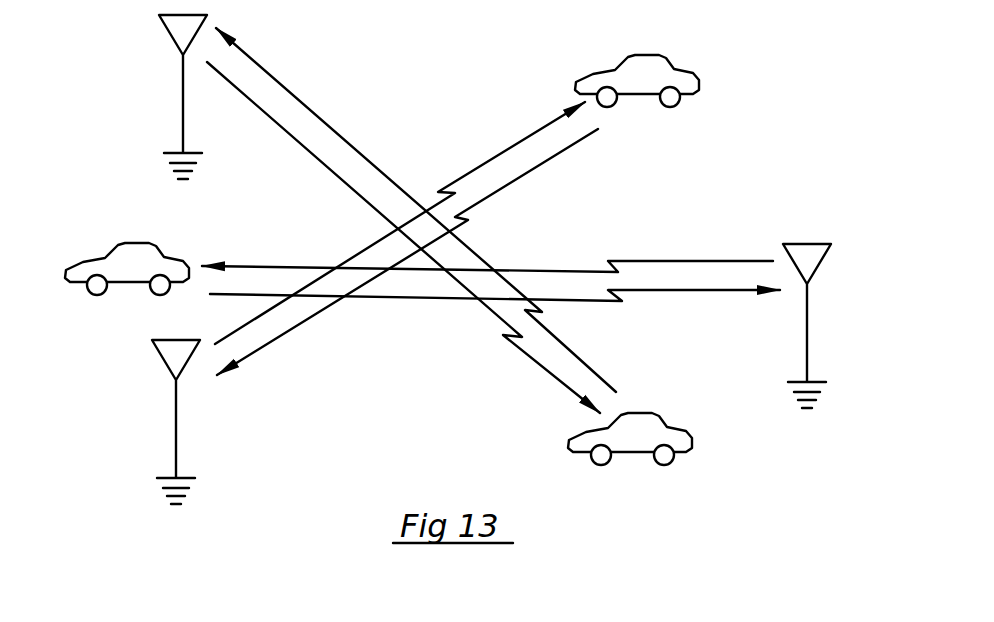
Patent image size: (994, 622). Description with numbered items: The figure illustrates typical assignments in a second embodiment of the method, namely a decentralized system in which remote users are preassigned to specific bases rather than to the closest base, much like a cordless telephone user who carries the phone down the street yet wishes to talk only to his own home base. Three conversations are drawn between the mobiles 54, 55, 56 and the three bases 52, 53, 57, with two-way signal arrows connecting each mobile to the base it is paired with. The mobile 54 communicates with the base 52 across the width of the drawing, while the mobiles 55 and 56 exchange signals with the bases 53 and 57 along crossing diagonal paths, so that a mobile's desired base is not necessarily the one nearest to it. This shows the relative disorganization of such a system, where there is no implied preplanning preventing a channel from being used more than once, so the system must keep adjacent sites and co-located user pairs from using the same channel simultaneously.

The base 52 is at (807, 354).
The base 53 is at (176, 452).
The mobile 54 is at (129, 282).
The mobile 55 is at (640, 94).
The mobile 56 is at (634, 452).
The base 57 is at (183, 127).